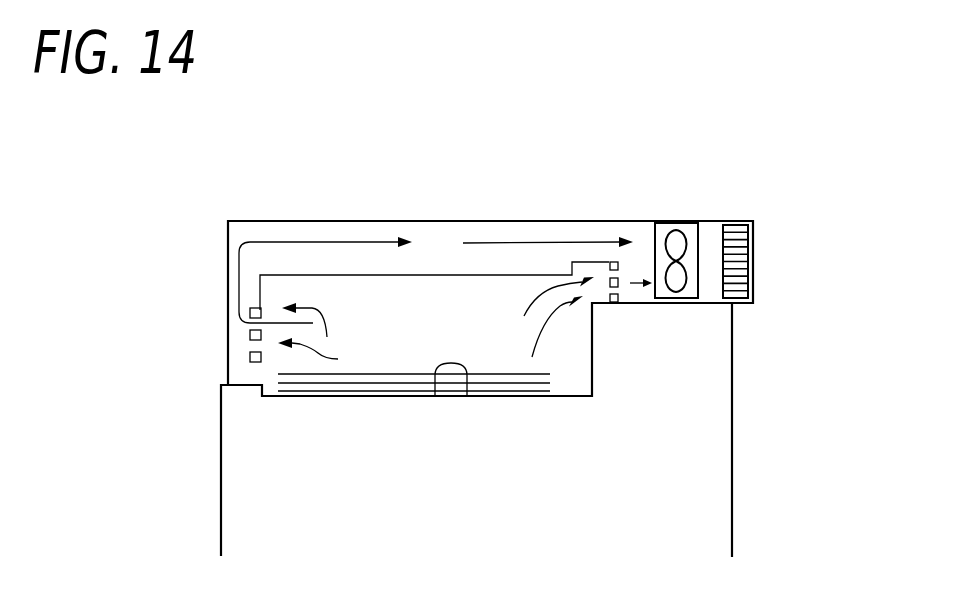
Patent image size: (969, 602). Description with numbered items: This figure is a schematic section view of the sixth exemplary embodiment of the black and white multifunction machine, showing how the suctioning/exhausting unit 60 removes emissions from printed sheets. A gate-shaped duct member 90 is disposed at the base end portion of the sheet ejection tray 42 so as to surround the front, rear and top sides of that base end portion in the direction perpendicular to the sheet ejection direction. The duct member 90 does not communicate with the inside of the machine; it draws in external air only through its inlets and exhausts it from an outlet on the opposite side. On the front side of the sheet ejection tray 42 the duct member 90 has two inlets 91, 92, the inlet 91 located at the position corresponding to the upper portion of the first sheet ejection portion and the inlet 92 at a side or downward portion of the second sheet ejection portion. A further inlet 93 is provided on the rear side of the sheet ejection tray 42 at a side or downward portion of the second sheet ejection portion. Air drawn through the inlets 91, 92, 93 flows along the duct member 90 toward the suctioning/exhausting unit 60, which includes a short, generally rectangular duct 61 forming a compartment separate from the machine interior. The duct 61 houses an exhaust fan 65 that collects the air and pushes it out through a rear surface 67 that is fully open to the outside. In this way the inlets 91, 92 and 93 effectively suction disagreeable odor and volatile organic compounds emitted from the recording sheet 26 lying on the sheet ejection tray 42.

The duct member 90 is at (445, 221).
The inlet 92 is at (262, 323).
The inlet 91 is at (245, 372).
The inlet 93 is at (620, 272).
The suctioning/exhausting unit 60 is at (689, 204).
The exhaust fan 65 is at (672, 222).
The rear surface 67 is at (738, 222).
The recording sheet 26 is at (387, 373).
The sheet ejection tray 42 is at (467, 396).
The duct 61 is at (643, 304).